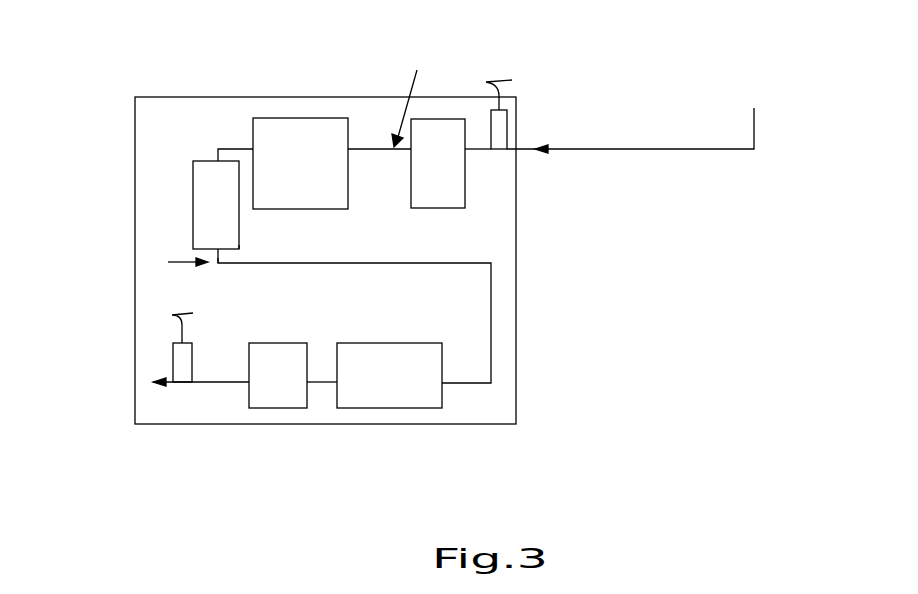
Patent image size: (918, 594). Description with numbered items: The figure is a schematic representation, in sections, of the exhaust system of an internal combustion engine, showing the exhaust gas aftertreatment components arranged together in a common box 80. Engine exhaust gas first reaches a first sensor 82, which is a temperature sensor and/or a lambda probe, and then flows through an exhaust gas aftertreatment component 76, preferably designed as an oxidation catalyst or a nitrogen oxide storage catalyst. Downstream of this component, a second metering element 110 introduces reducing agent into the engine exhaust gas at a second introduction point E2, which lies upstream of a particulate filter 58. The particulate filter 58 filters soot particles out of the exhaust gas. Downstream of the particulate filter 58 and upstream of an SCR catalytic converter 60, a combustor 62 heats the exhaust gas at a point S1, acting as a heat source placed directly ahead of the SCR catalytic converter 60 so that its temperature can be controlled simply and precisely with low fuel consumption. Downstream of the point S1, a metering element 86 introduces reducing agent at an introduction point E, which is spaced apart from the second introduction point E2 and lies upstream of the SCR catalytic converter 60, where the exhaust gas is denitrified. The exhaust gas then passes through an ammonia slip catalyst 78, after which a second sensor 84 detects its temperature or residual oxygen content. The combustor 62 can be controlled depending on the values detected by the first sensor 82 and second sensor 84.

The particulate filter 58 is at (266, 118).
The SCR catalytic converter 60 is at (390, 408).
The combustor 62 is at (193, 190).
The exhaust gas aftertreatment component 76 is at (450, 208).
The ammonia slip catalyst 78 is at (277, 408).
The common box 80 is at (516, 327).
The first sensor 82 is at (501, 131).
The second sensor 84 is at (174, 358).
The metering element 86 is at (168, 262).
The second metering element 110 is at (393, 142).
The point S1 is at (254, 248).
The introduction point E is at (226, 277).
The second introduction point E2 is at (390, 168).